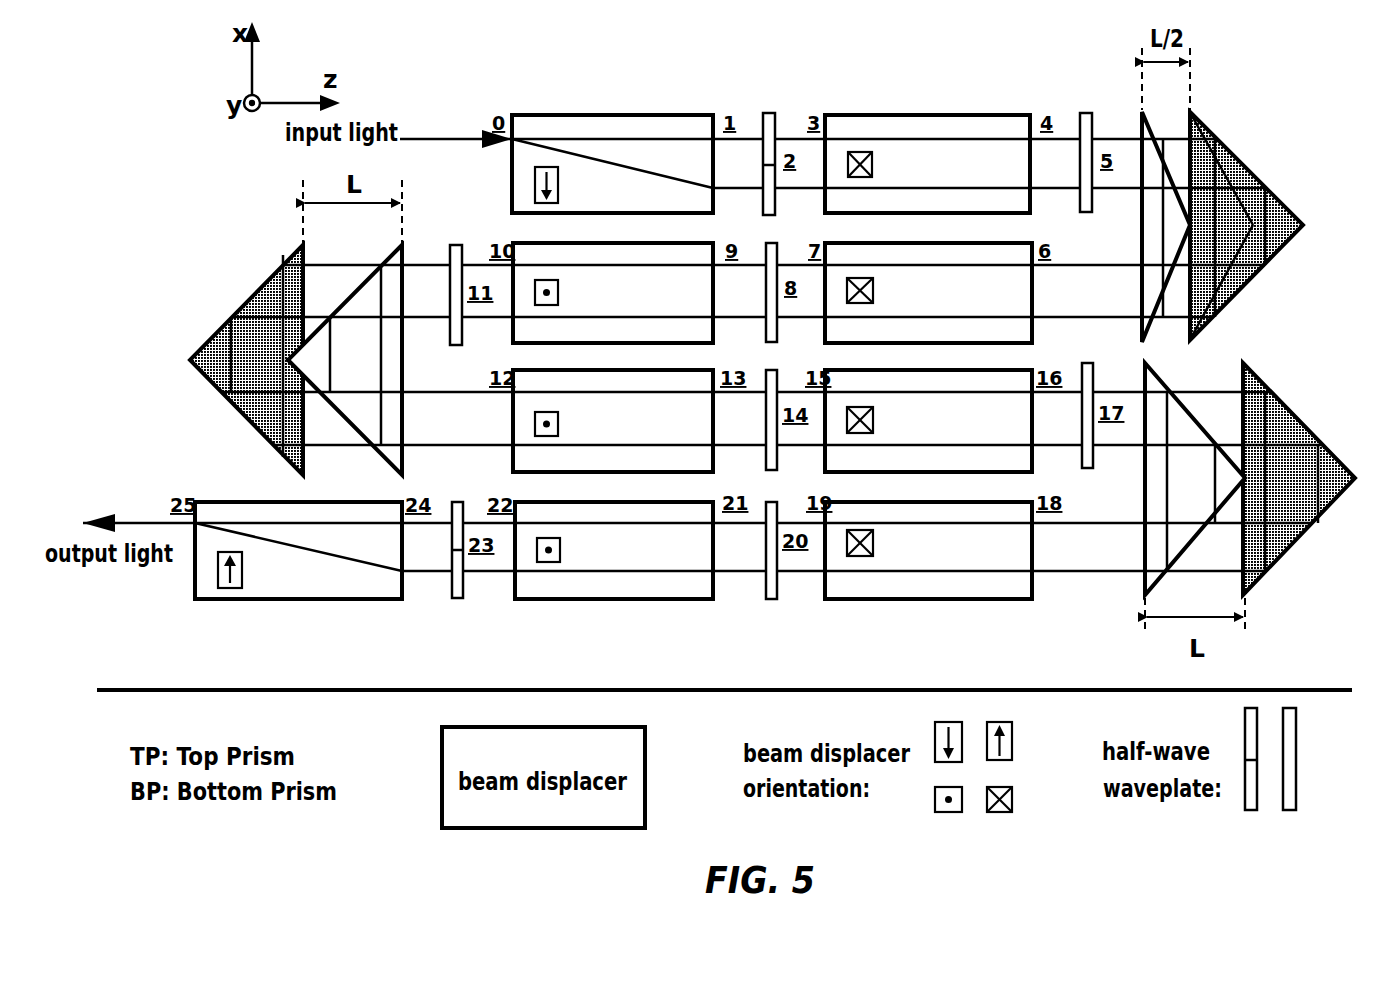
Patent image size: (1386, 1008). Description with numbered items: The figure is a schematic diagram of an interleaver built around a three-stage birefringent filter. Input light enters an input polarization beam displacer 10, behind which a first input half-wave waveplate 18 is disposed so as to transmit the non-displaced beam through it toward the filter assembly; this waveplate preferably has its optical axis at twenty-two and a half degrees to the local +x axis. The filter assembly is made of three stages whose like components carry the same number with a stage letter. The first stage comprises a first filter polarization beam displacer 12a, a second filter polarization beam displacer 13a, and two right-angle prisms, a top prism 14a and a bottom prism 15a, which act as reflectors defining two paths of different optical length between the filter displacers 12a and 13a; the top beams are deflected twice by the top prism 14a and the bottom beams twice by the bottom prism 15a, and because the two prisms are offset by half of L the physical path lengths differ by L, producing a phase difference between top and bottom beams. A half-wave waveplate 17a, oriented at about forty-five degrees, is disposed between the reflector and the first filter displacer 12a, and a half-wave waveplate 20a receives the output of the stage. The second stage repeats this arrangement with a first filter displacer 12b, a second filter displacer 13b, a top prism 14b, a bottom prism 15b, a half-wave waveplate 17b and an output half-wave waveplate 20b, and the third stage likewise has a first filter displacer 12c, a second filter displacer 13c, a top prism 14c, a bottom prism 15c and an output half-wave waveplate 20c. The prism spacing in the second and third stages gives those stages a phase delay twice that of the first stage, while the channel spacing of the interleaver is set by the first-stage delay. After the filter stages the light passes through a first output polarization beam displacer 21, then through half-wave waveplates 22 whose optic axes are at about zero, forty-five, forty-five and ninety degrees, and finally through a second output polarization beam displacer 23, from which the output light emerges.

The input polarization beam displacer 10 is at (594, 117).
The first filter polarization beam displacer 12a is at (878, 113).
The first filter polarization beam displacer 12b is at (618, 243).
The first filter polarization beam displacer 12c is at (905, 370).
The second filter polarization beam displacer 13a is at (930, 242).
The second filter polarization beam displacer 13b is at (567, 370).
The second filter polarization beam displacer 13c is at (905, 500).
The top prism 14a is at (1248, 283).
The top prism 14b is at (205, 377).
The top prism 14c is at (1300, 416).
The bottom prism 15a is at (1140, 328).
The bottom prism 15b is at (403, 460).
The bottom prism 15c is at (1143, 578).
The half-wave waveplate 17a is at (1093, 123).
The half-wave waveplate 17b is at (468, 248).
The first input half-wave waveplate 18 is at (768, 112).
The half-wave waveplate 20a is at (776, 328).
The half-wave waveplate 20b is at (768, 462).
The half-wave waveplate 20c is at (778, 598).
The first output polarization beam displacer 21 is at (580, 599).
The half-wave waveplate 22 is at (473, 600).
The second output polarization beam displacer 23 is at (295, 601).